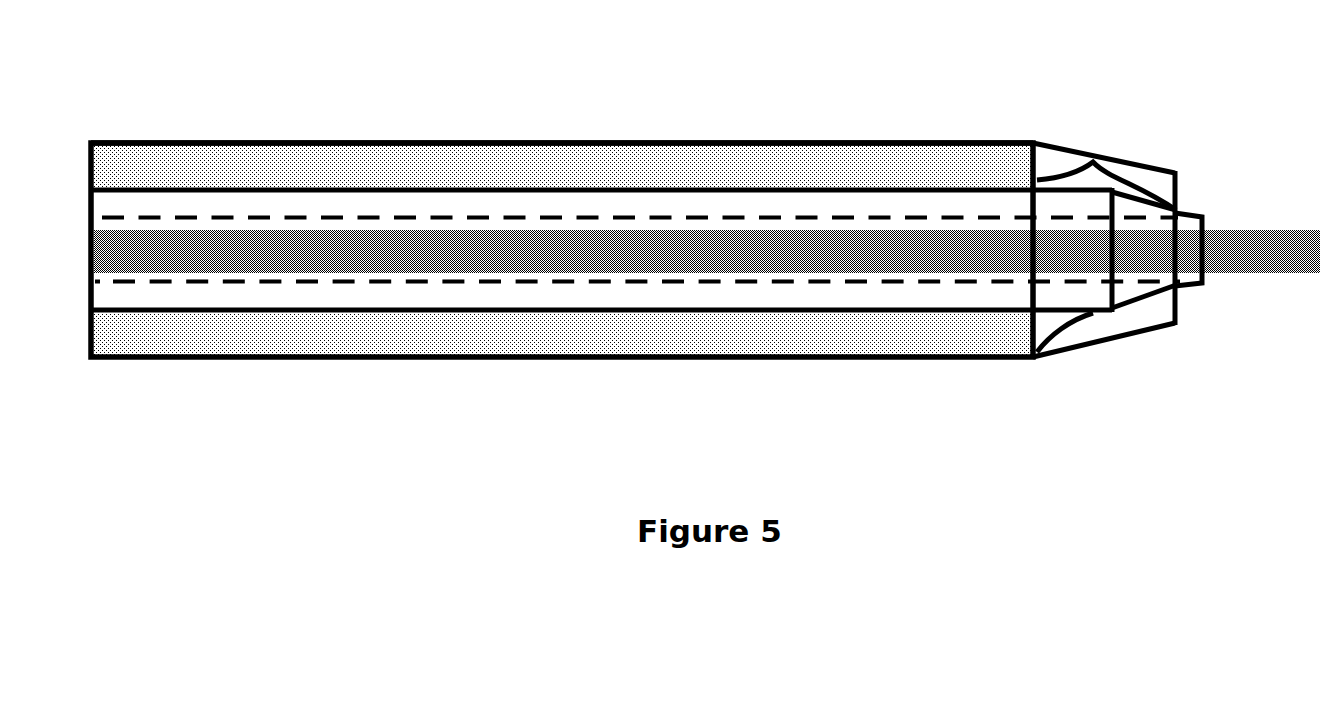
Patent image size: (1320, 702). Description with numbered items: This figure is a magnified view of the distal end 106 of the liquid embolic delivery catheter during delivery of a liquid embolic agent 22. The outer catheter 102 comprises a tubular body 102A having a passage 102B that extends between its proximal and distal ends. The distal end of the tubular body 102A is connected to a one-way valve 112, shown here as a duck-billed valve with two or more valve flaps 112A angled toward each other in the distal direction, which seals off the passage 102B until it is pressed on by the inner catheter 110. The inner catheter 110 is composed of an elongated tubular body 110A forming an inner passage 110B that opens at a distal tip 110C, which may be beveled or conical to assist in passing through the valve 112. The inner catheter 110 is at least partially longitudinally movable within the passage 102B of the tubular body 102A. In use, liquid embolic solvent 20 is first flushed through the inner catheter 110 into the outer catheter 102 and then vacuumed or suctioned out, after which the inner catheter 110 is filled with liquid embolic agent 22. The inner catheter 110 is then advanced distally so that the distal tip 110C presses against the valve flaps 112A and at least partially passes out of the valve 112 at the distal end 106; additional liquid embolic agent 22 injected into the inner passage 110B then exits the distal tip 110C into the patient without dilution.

The outer catheter 102 is at (705, 252).
The tubular body 102A is at (579, 143).
The passage 102B is at (343, 162).
The liquid embolic solvent 20 is at (757, 162).
The liquid embolic agent 22 is at (892, 247).
The inner catheter 110 is at (635, 331).
The elongated tubular body 110A is at (290, 313).
The inner passage 110B is at (553, 282).
The distal tip 110C is at (1127, 292).
The one-way valve 112 is at (1120, 275).
The valve flaps 112A is at (1095, 165).
The distal end 106 is at (705, 310).